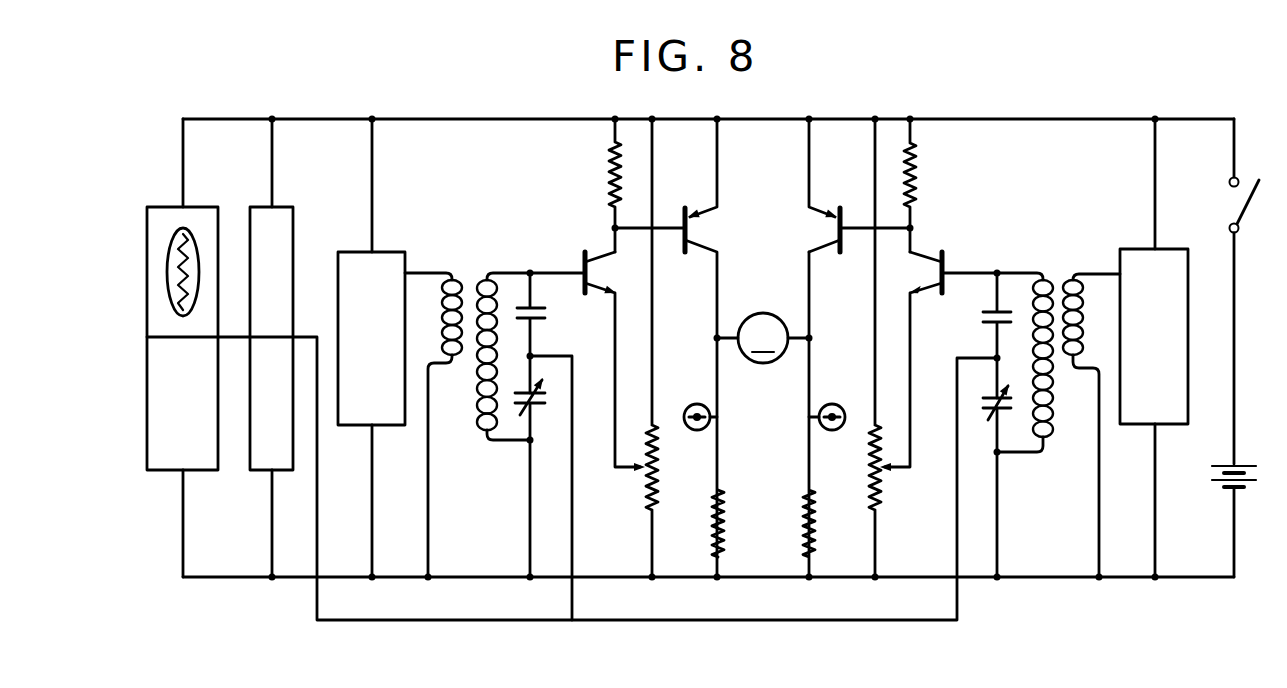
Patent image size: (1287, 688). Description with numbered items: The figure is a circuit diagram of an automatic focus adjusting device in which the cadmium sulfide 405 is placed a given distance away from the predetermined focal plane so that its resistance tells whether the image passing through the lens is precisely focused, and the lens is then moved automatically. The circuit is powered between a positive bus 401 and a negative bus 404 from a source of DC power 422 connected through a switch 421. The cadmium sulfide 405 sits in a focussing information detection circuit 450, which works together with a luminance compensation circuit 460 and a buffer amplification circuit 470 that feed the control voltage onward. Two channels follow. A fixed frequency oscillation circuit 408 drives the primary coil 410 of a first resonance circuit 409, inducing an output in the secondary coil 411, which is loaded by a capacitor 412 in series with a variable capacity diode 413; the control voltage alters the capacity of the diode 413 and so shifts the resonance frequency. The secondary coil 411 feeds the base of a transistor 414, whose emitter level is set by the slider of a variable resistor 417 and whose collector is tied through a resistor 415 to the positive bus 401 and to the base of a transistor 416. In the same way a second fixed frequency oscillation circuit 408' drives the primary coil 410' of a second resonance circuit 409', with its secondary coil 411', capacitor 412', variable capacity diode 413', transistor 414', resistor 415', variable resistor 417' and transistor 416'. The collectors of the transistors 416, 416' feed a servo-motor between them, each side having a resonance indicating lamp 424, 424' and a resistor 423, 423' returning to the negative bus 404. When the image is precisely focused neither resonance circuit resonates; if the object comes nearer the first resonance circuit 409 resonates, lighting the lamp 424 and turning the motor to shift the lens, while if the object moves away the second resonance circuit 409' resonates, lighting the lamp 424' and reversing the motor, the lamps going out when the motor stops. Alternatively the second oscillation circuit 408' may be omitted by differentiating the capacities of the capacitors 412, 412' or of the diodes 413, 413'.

The positive bus 401 is at (658, 119).
The negative bus 404 is at (786, 578).
The cadmium sulfide 405 is at (183, 228).
The fixed frequency oscillation circuit 408 is at (385, 252).
The second fixed frequency oscillation circuit 408′ is at (1130, 249).
The first resonance circuit 409 is at (505, 258).
The second resonance circuit 409′ is at (1062, 240).
The primary coil 410 is at (458, 275).
The primary coil 410′ is at (1069, 276).
The secondary coil 411 is at (477, 413).
The secondary coil 411′ is at (1043, 448).
The capacitor 412 is at (543, 311).
The capacitor 412′ is at (983, 319).
The variable capacity diode 413 is at (525, 420).
The variable capacity diode 413′ is at (990, 398).
The transistor 414 is at (585, 252).
The transistor 414′ is at (942, 253).
The resistor 415 is at (612, 150).
The resistor 415′ is at (916, 180).
The transistor 416 is at (688, 215).
The transistor 416′ is at (837, 214).
The variable resistor 417 is at (640, 468).
The variable resistor 417′ is at (883, 468).
The switch 421 is at (1230, 215).
The source of DC power 422 is at (1230, 488).
The resistor 423 is at (725, 530).
The resistor 423′ is at (816, 530).
The resonance indicating lamp 424 is at (692, 430).
The resonance indicating lamp 424′ is at (838, 430).
The focussing information detection circuit 450 is at (203, 207).
The luminance compensation circuit 460 is at (190, 473).
The buffer amplification circuit 470 is at (283, 207).